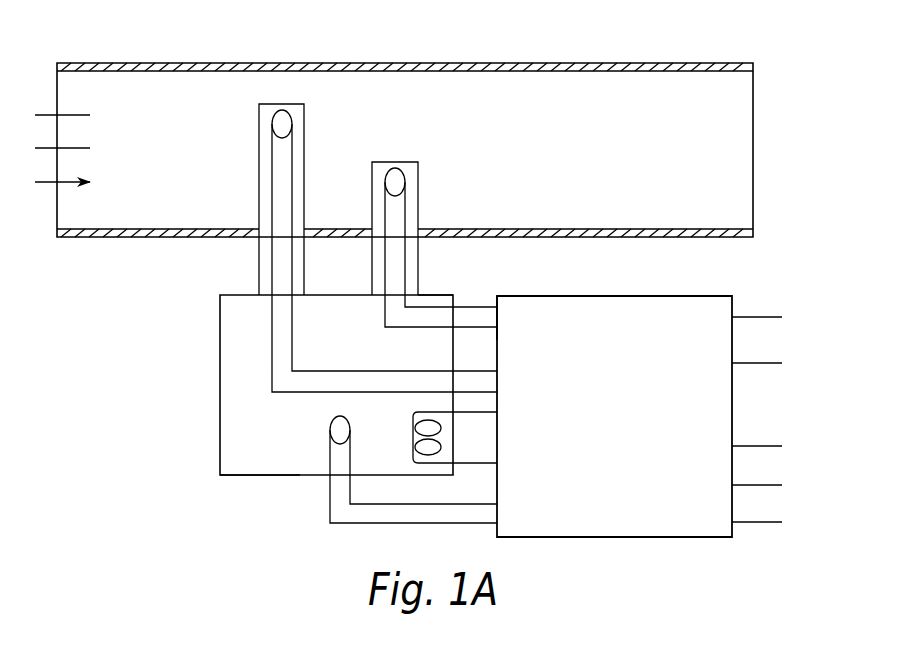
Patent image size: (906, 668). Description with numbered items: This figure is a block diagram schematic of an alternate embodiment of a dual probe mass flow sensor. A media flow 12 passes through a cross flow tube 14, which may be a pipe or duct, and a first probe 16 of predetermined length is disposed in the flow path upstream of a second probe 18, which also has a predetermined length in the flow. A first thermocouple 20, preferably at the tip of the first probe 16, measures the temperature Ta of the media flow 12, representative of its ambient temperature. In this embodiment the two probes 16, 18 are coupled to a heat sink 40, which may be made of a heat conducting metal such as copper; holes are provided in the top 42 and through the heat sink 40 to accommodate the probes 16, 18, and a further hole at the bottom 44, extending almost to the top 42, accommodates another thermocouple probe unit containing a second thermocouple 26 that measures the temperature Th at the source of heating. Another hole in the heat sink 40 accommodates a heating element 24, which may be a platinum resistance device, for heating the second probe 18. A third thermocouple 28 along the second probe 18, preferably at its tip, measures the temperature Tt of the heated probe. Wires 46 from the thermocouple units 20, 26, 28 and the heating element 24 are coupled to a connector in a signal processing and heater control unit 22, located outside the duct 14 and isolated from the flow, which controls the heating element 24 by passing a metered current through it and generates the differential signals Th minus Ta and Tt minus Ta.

The media flow 12 is at (98, 132).
The cross flow tube 14 is at (634, 95).
The first probe 16 is at (257, 200).
The second probe 18 is at (369, 182).
The first thermocouple 20 is at (284, 122).
The signal processing and heater control unit 22 is at (671, 538).
The heater element 24 is at (413, 438).
The second thermocouple 26 is at (336, 428).
The third thermocouple 28 is at (398, 182).
The heat sink 40 is at (216, 388).
The top of heat sink 42 is at (436, 295).
The bottom of heat sink 44 is at (240, 476).
The wires 46 is at (480, 297).